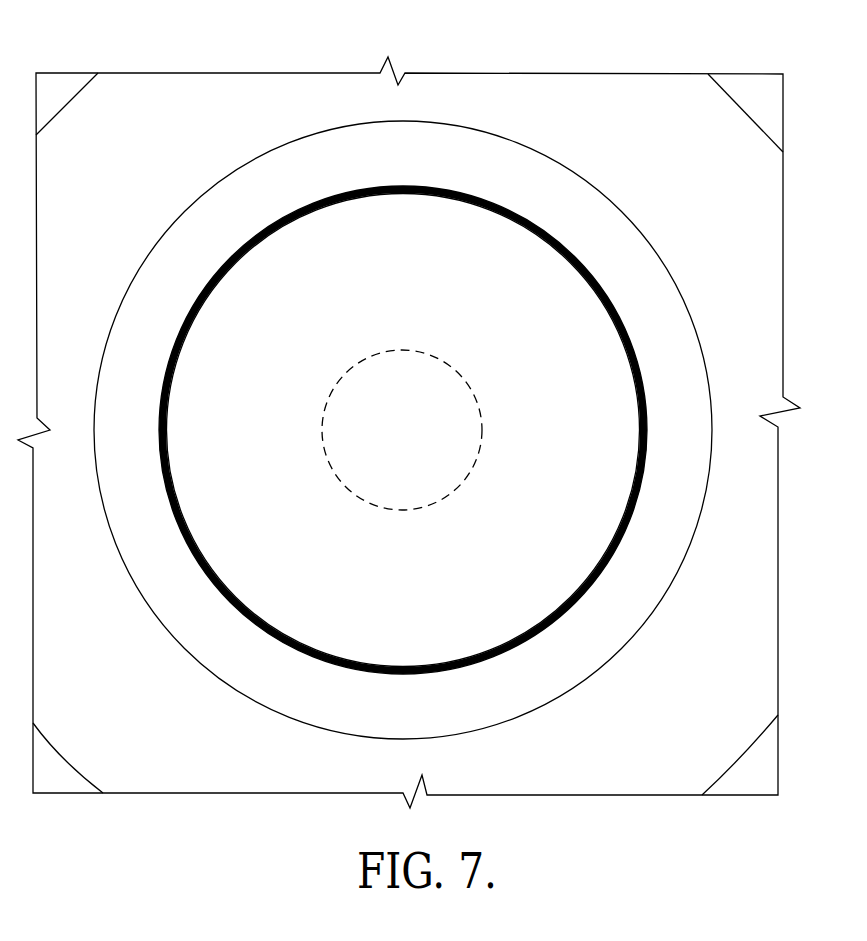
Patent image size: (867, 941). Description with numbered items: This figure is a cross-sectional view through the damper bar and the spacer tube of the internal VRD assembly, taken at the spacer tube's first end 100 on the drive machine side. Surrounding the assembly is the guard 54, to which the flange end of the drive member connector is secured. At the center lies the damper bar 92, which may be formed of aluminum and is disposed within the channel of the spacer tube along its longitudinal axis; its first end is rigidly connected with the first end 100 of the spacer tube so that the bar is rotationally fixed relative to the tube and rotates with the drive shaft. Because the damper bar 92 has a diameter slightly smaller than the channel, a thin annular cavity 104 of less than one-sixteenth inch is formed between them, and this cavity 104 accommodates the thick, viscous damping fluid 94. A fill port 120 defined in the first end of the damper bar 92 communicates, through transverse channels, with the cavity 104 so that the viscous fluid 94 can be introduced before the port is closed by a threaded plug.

The guard 54 is at (62, 85).
The first end of spacer tube 100 is at (163, 93).
The viscous damping fluid 94 is at (358, 188).
The damper bar 92 is at (460, 227).
The cavity 104 is at (310, 205).
The fill port 120 is at (480, 430).